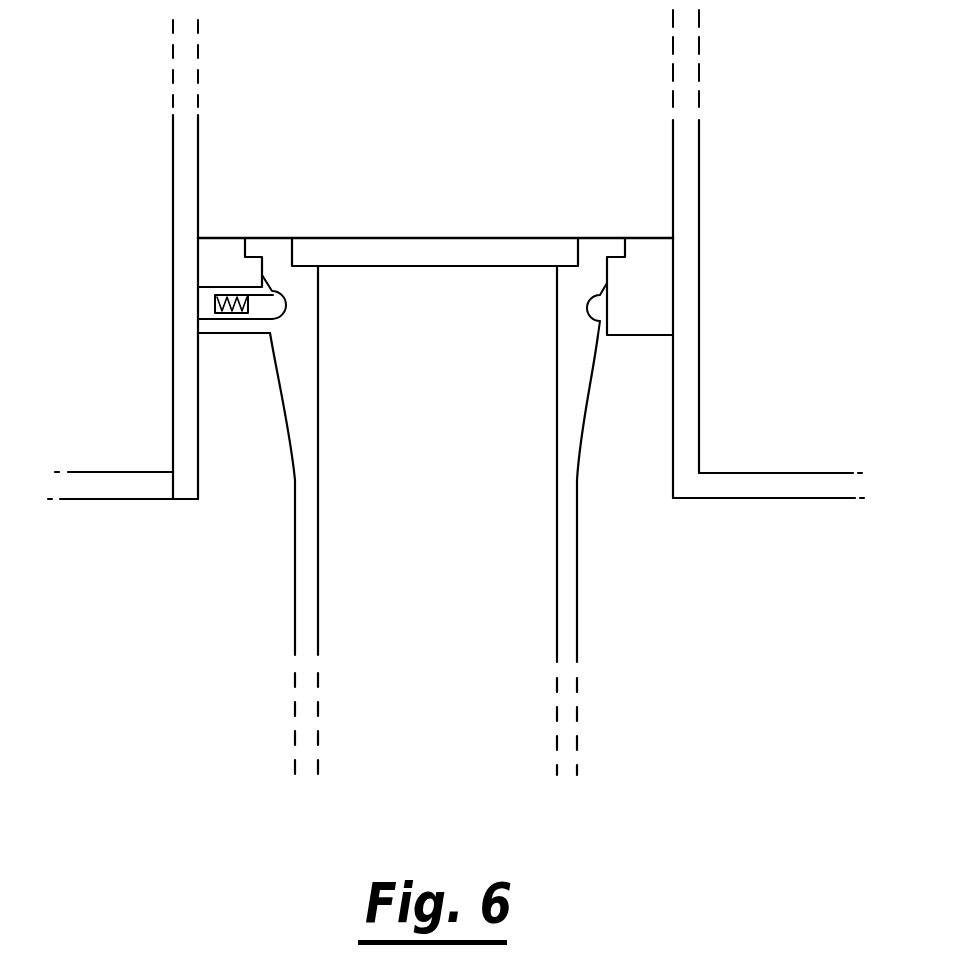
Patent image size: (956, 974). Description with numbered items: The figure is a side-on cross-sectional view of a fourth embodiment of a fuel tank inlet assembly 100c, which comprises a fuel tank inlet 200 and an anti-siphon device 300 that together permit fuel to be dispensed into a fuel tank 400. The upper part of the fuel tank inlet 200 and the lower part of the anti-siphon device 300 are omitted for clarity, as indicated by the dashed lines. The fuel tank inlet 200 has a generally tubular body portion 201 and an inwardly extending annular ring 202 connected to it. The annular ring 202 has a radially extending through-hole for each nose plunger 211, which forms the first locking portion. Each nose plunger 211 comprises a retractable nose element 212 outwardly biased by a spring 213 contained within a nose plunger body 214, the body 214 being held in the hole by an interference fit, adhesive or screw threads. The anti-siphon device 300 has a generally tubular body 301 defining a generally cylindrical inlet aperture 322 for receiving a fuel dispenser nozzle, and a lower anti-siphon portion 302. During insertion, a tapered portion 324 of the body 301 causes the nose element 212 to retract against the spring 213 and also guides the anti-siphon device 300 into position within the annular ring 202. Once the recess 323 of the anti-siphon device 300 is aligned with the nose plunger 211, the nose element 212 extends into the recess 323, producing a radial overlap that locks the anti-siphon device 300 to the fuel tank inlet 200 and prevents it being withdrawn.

The fuel tank inlet assembly 100c is at (132, 148).
The fuel tank inlet 200 is at (743, 192).
The body portion 201 is at (685, 266).
The annular ring 202 is at (655, 307).
The nose plunger 211 is at (223, 290).
The nose element 212 is at (258, 305).
The spring 213 is at (234, 310).
The nose plunger body 214 is at (214, 304).
The anti-siphon device 300 is at (672, 520).
The tubular body 301 is at (573, 443).
The anti-siphon portion 302 is at (235, 520).
The inlet aperture 322 is at (455, 203).
The recess 323 is at (287, 312).
The tapered portion 324 is at (290, 445).
The fuel tank 400 is at (783, 447).